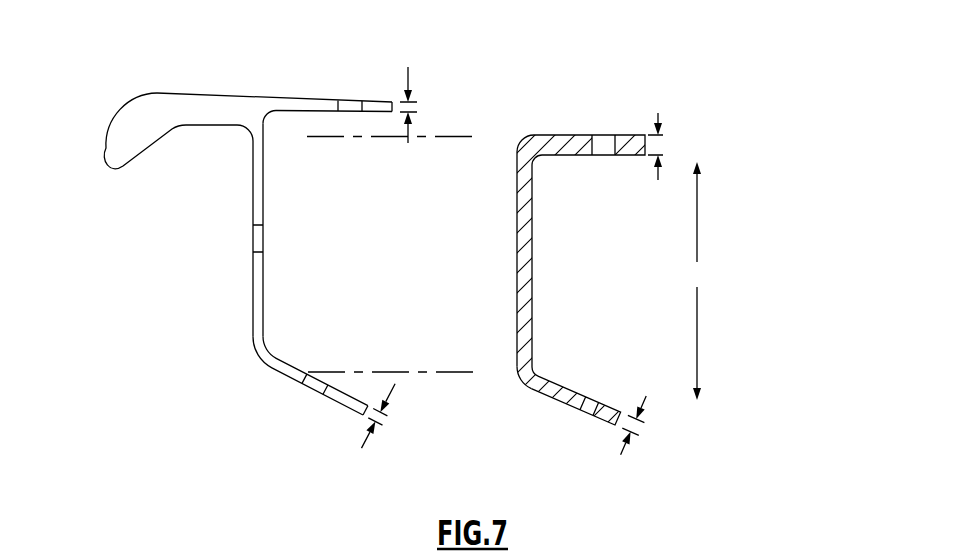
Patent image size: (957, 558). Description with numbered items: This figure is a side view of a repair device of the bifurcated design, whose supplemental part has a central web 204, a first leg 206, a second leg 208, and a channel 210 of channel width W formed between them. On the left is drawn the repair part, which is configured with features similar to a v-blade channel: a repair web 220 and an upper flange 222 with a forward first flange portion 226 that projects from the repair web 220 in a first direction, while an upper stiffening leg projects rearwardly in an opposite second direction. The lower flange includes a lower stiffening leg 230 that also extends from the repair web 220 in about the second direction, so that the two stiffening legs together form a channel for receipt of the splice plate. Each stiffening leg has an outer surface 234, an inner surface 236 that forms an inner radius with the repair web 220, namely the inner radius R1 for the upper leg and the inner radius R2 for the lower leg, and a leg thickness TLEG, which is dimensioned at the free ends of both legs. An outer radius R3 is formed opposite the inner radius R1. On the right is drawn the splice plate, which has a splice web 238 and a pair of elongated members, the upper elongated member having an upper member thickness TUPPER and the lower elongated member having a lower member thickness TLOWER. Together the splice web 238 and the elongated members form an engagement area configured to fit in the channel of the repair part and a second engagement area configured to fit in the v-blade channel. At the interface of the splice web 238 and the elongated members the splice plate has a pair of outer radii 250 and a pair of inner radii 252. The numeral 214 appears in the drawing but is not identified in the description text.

The central web 204 is at (244, 253).
The first leg 206 is at (714, 140).
The second leg 208 is at (570, 289).
The channel 210 is at (718, 457).
The upper leg of clip 214 is at (308, 99).
The repair web 220 is at (200, 256).
The upper flange 222 is at (382, 56).
The first flange portion 226 is at (152, 68).
The lower stiffening leg 230 is at (400, 435).
The outer surface 234 is at (328, 397).
The inner surface 236 is at (338, 112).
The splice web 238 is at (495, 264).
The outer radii 250 is at (510, 127).
The inner radii 252 is at (552, 174).
The inner radius R1 is at (287, 132).
The inner radius R2 is at (287, 338).
The outer radius R3 is at (232, 153).
The leg thickness TLEG is at (408, 67).
The upper member thickness TUPPER is at (658, 113).
The lower member thickness TLOWER is at (622, 453).
The channel width W is at (699, 281).